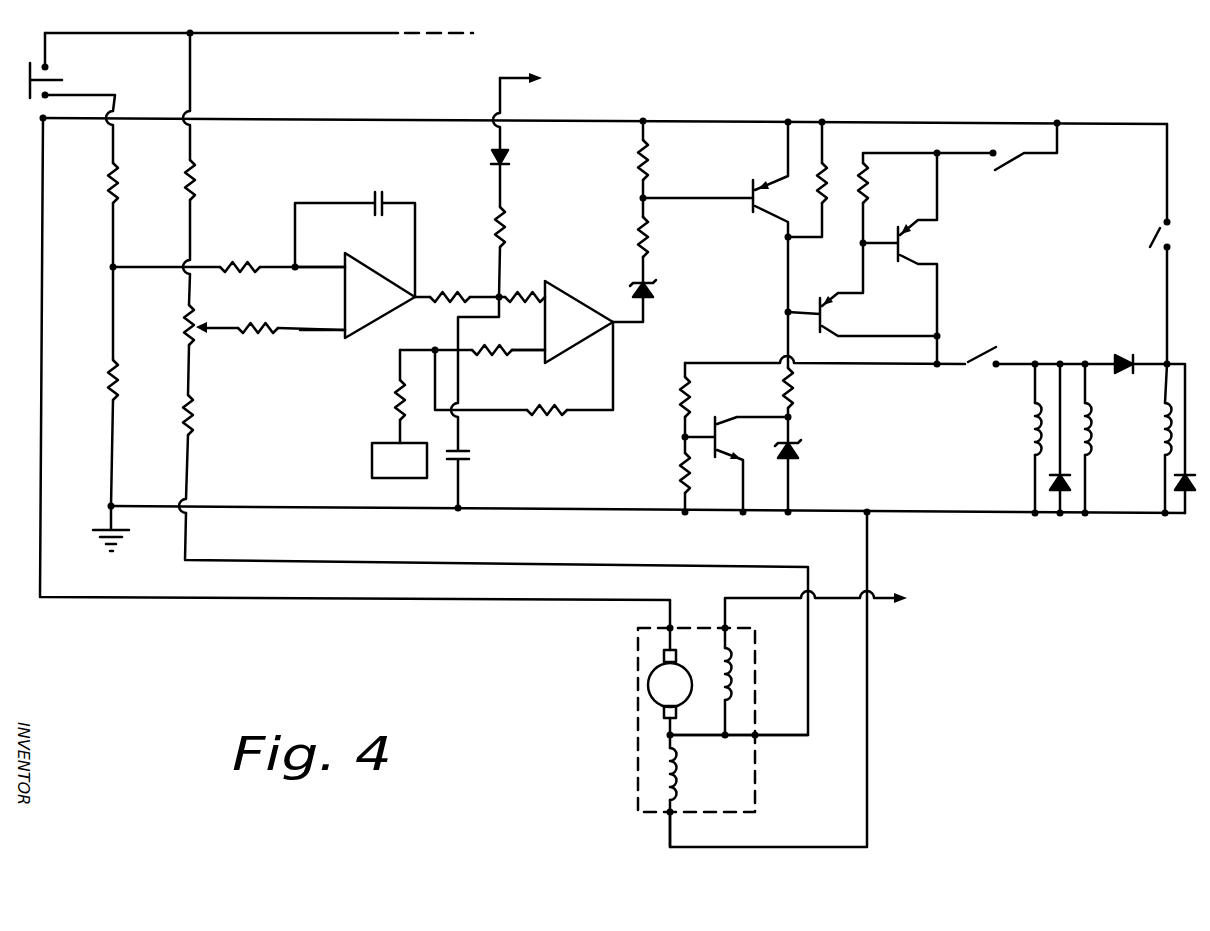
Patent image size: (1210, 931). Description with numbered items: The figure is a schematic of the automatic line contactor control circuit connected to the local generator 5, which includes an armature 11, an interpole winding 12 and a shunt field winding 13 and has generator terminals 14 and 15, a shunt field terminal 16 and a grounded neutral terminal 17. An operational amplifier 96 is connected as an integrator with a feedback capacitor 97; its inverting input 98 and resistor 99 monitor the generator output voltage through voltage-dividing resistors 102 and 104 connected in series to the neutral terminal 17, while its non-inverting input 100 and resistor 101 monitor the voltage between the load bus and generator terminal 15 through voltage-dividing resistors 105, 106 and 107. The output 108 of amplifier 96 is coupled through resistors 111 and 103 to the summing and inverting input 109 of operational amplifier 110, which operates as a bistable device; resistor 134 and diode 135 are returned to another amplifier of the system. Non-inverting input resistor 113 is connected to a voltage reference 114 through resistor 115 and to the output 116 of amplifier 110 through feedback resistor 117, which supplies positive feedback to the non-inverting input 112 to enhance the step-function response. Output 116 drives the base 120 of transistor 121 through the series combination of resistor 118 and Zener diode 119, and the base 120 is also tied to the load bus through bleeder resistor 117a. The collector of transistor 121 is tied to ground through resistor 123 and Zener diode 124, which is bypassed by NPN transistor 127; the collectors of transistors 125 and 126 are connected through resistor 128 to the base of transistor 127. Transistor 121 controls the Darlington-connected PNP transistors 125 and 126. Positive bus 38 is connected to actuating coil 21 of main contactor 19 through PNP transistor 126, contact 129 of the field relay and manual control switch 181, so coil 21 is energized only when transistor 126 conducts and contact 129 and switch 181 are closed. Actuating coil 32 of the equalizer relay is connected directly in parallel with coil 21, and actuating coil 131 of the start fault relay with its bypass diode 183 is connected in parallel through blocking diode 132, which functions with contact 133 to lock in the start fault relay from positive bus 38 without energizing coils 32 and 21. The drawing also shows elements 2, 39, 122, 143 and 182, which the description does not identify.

The power supply lead 2 is at (291, 32).
The main contactor 19 is at (50, 70).
The positive bus 38 is at (368, 119).
The return conductor 39 is at (295, 506).
The voltage dividing resistor 102 is at (108, 188).
The voltage dividing resistor 104 is at (108, 396).
The voltage-dividing resistor 105 is at (196, 176).
The voltage-dividing resistor 106 is at (194, 318).
The voltage-dividing resistor 107 is at (196, 410).
The resistor 99 is at (243, 265).
The resistor 101 is at (260, 336).
The feedback capacitor 97 is at (375, 193).
The inverting input 98 is at (340, 263).
The operational amplifier 96 is at (354, 331).
The non-inverting input 100 is at (340, 336).
The output 108 is at (416, 297).
The resistor 111 is at (448, 302).
The diode 135 is at (493, 160).
The resistor 134 is at (505, 212).
The resistor 103 is at (525, 310).
The summing and inverting input 109 is at (532, 294).
The operational amplifier 110 is at (587, 299).
The non-inverting input resistor 113 is at (503, 346).
The non-inverting input 112 is at (525, 358).
The resistor 115 is at (393, 400).
The voltage reference 114 is at (372, 456).
The output 116 is at (619, 326).
The feedback resistor 117 is at (545, 416).
The capacitor 143 is at (467, 463).
The bleeder resistor 117a is at (641, 150).
The resistor 118 is at (640, 223).
The Zener diode 119 is at (648, 282).
The base 120 is at (683, 199).
The transistor 121 is at (751, 188).
The resistor 122 is at (824, 166).
The PNP transistor 126 is at (898, 230).
The manual control switch 181 is at (996, 170).
The contact 133 is at (1153, 228).
The PNP transistor 125 is at (819, 305).
The contact 129 is at (983, 356).
The blocking diode 132 is at (1126, 357).
The NPN transistor 127 is at (717, 418).
The resistor 123 is at (795, 390).
The Zener diode 124 is at (799, 444).
The resistor 128 is at (680, 406).
The actuating coil 21 is at (1030, 431).
The actuating coil 32 is at (1093, 425).
The actuating coil 131 is at (1158, 450).
The diode 182 is at (1046, 483).
The bypass diode 183 is at (1184, 496).
The local generator 5 is at (632, 681).
The armature 11 is at (651, 696).
The interpole winding 12 is at (655, 781).
The shunt field winding 13 is at (740, 670).
The generator terminal 14 is at (672, 627).
The generator terminal 15 is at (758, 738).
The shunt field terminal 16 is at (728, 629).
The neutral terminal 17 is at (668, 815).